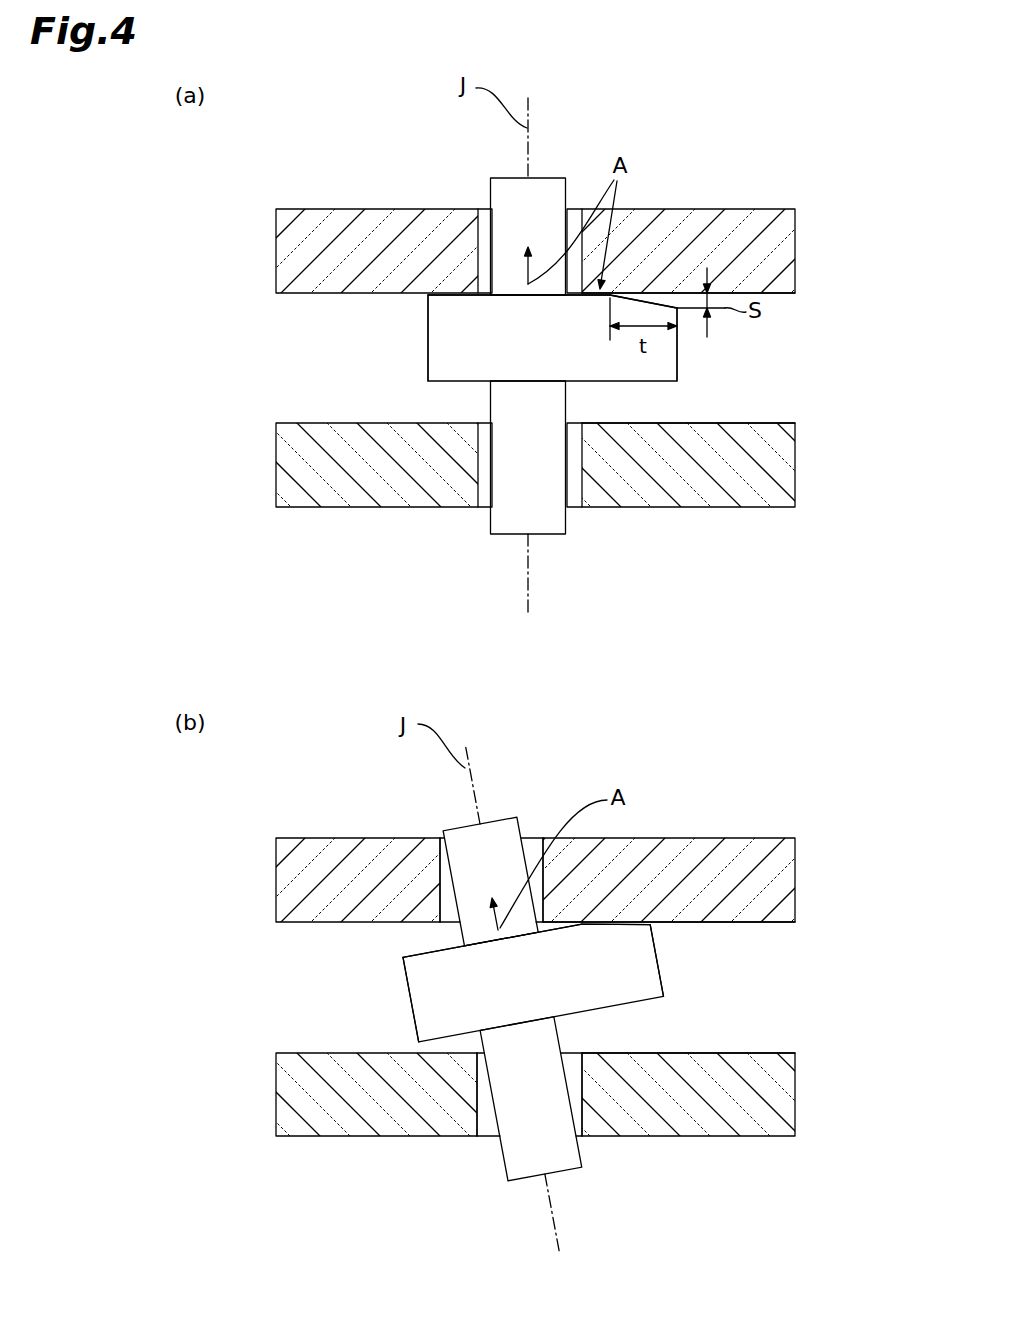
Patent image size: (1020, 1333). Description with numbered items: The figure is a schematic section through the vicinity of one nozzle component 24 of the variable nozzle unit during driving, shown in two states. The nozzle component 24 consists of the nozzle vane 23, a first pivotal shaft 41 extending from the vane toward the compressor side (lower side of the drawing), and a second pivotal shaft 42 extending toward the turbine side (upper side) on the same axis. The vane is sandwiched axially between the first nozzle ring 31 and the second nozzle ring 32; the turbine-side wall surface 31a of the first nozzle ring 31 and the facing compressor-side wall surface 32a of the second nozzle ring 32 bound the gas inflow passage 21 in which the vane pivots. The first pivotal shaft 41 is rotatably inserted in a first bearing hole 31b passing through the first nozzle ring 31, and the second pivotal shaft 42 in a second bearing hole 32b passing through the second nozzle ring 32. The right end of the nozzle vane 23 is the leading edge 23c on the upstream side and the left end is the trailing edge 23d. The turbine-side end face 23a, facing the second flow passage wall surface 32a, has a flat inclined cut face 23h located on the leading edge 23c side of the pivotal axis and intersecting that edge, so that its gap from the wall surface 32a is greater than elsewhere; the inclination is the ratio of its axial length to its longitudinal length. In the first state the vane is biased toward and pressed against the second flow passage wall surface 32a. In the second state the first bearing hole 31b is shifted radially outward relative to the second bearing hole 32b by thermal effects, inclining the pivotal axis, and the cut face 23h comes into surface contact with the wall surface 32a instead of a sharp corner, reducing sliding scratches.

The gas inflow passage 21 is at (355, 394).
The nozzle vane 23 is at (591, 673).
The end face 23a is at (608, 295).
The leading edge 23c is at (677, 352).
The trailing edge 23d is at (428, 327).
The cut face 23h is at (656, 300).
The nozzle component 24 is at (520, 645).
The first nozzle ring 31 is at (542, 803).
The first flow passage wall surface 31a is at (757, 423).
The first bearing hole 31b is at (487, 467).
The second nozzle ring 32 is at (536, 562).
The second flow passage wall surface 32a is at (773, 293).
The second bearing hole 32b is at (470, 240).
The first pivotal shaft 41 is at (558, 517).
The second pivotal shaft 42 is at (492, 195).